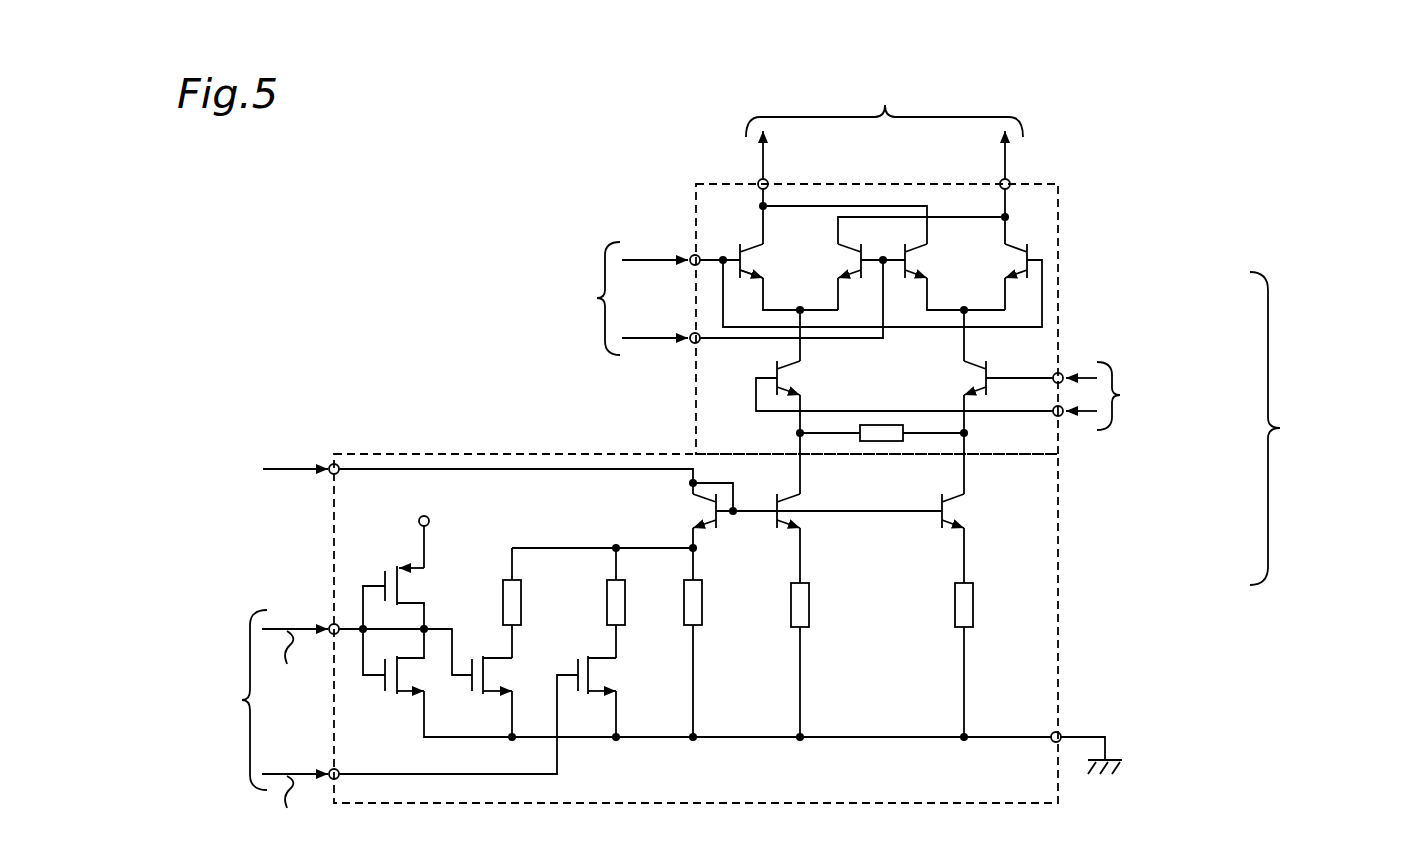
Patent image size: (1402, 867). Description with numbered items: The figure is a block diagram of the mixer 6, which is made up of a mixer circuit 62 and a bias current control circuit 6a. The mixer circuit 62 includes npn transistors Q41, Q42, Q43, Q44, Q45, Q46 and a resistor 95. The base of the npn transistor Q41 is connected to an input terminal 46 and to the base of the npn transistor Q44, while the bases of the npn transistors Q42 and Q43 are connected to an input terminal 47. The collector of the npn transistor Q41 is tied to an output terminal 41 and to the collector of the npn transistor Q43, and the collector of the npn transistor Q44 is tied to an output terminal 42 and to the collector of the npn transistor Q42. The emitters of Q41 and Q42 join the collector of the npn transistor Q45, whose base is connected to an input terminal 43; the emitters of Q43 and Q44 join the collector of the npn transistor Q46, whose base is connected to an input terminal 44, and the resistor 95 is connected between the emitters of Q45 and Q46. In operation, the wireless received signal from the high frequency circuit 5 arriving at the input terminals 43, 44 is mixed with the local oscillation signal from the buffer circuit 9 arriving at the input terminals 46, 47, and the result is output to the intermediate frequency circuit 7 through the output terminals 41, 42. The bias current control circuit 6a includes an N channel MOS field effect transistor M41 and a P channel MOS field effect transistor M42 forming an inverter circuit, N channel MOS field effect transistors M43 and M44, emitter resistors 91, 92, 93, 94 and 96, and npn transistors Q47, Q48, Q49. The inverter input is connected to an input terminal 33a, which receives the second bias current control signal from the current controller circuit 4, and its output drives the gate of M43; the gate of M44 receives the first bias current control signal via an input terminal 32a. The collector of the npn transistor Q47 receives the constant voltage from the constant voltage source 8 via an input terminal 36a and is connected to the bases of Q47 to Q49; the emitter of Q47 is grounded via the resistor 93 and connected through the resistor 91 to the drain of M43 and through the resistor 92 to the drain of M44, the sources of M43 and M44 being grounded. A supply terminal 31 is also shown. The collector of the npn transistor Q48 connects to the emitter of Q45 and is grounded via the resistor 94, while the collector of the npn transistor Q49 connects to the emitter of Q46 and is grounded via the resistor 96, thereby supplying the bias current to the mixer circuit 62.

The output terminal 41 is at (768, 181).
The output terminal 42 is at (1000, 181).
The input terminal 43 is at (1053, 416).
The input terminal 44 is at (1062, 374).
The input terminal 46 is at (692, 256).
The input terminal 47 is at (692, 333).
The input terminal 36a is at (331, 464).
The input terminal 33a is at (331, 624).
The input terminal 32a is at (331, 769).
The Vdd terminal 31 is at (430, 521).
The emitter resistor 91 is at (503, 600).
The emitter resistor 92 is at (607, 600).
The emitter resistor 93 is at (684, 600).
The emitter resistor 94 is at (791, 600).
The resistor 95 is at (881, 441).
The emitter resistor 96 is at (955, 600).
The mixer circuit 62 is at (1058, 298).
The bias current control circuit 6a is at (1058, 543).
The mixer 6 is at (1315, 428).
The intermediate frequency circuit 7 is at (884, 91).
The buffer circuit 9 is at (563, 298).
The constant voltage source 8 is at (187, 475).
The current controller circuit 4 is at (200, 700).
The high frequency circuit 5 is at (1161, 393).
The npn transistor Q41 is at (765, 262).
The npn transistor Q42 is at (842, 252).
The npn transistor Q43 is at (930, 262).
The npn transistor Q44 is at (1005, 252).
The npn transistor Q45 is at (790, 374).
The npn transistor Q46 is at (975, 374).
The npn transistor Q47 is at (716, 529).
The npn transistor Q48 is at (775, 497).
The npn transistor Q49 is at (957, 502).
The N channel MOS field effect transistor M41 is at (385, 692).
The P channel MOS field effect transistor M42 is at (385, 573).
The N channel MOS field effect transistor M43 is at (472, 692).
The N channel MOS field effect transistor M44 is at (578, 662).